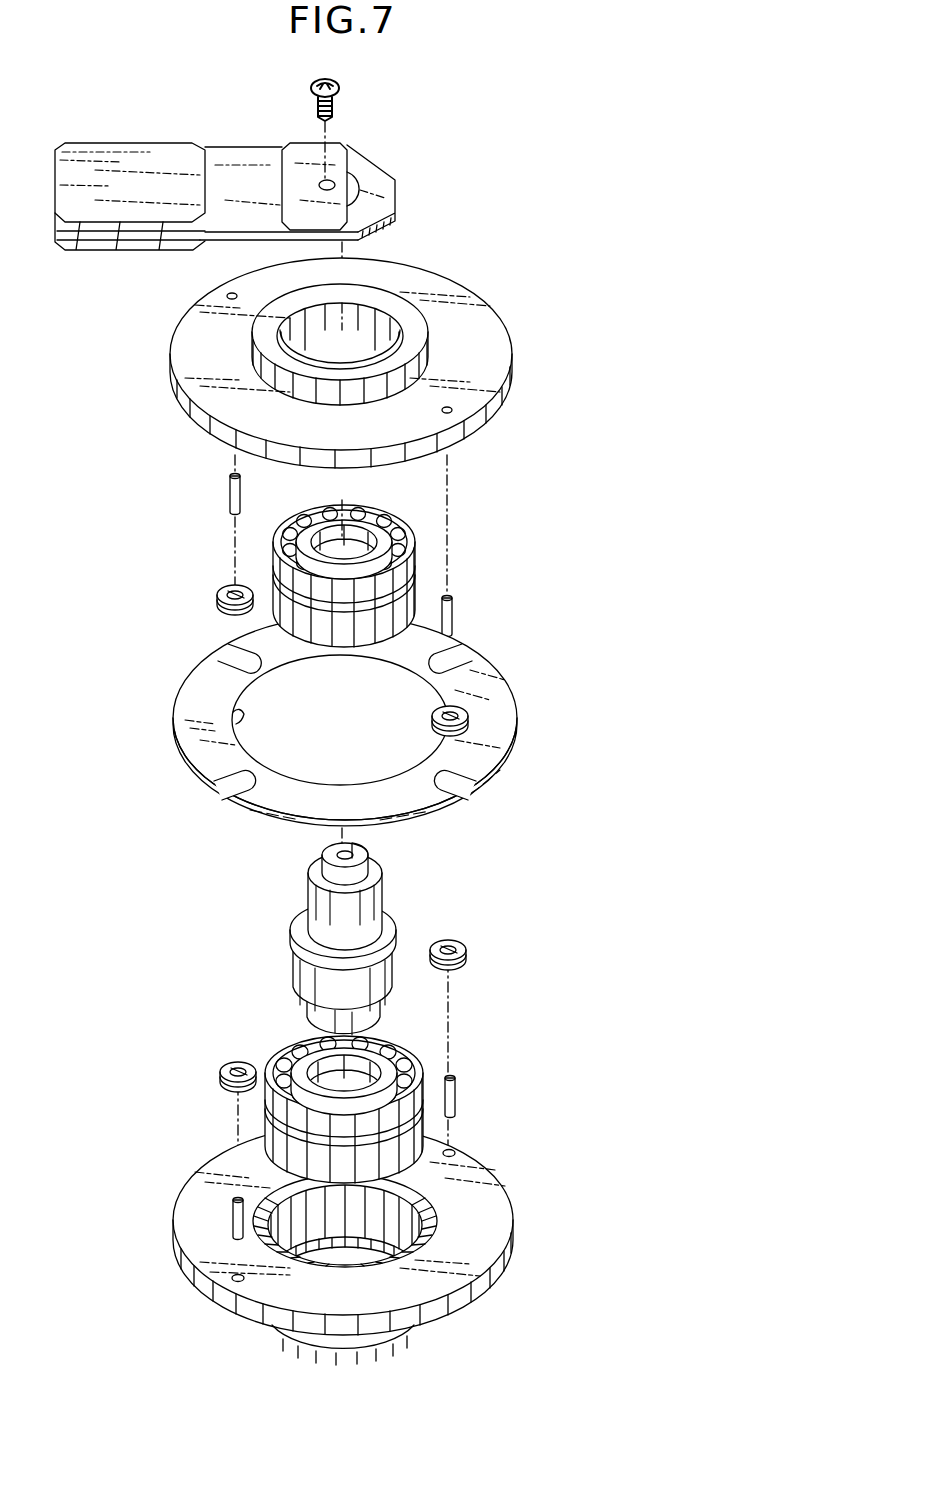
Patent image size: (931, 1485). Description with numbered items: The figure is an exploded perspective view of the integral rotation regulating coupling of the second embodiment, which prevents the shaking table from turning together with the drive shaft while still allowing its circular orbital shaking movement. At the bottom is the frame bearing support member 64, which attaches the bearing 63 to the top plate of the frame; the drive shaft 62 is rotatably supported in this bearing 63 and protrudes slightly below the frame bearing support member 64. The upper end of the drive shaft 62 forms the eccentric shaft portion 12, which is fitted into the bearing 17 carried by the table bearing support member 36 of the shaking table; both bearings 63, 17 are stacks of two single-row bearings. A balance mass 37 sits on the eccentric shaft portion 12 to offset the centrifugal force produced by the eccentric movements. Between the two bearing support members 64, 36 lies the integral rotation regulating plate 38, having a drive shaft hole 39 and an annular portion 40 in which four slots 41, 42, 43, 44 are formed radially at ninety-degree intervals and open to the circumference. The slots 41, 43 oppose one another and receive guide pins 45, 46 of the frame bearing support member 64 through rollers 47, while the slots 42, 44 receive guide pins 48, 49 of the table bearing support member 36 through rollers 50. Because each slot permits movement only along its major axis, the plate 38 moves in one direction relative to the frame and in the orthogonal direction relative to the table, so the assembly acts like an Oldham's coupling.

The eccentric shaft portion 12 is at (321, 939).
The bearing 17 is at (400, 535).
The table bearing support member 36 is at (455, 292).
The balance mass 37 is at (145, 150).
The integral rotation regulating plate 38 is at (360, 739).
The drive shaft hole 39 is at (232, 708).
The annular portion 40 is at (285, 810).
The slot 41 is at (222, 798).
The slot 42 is at (224, 657).
The slot 43 is at (466, 657).
The slot 44 is at (462, 796).
The guide pin 45 is at (232, 1218).
The guide pin 46 is at (458, 1093).
The roller 47 is at (452, 942).
The guide pin 48 is at (230, 490).
The guide pin 49 is at (455, 617).
The roller 50 is at (222, 597).
The drive shaft 62 is at (288, 970).
The bearing 63 is at (408, 1046).
The frame bearing support member 64 is at (490, 1212).